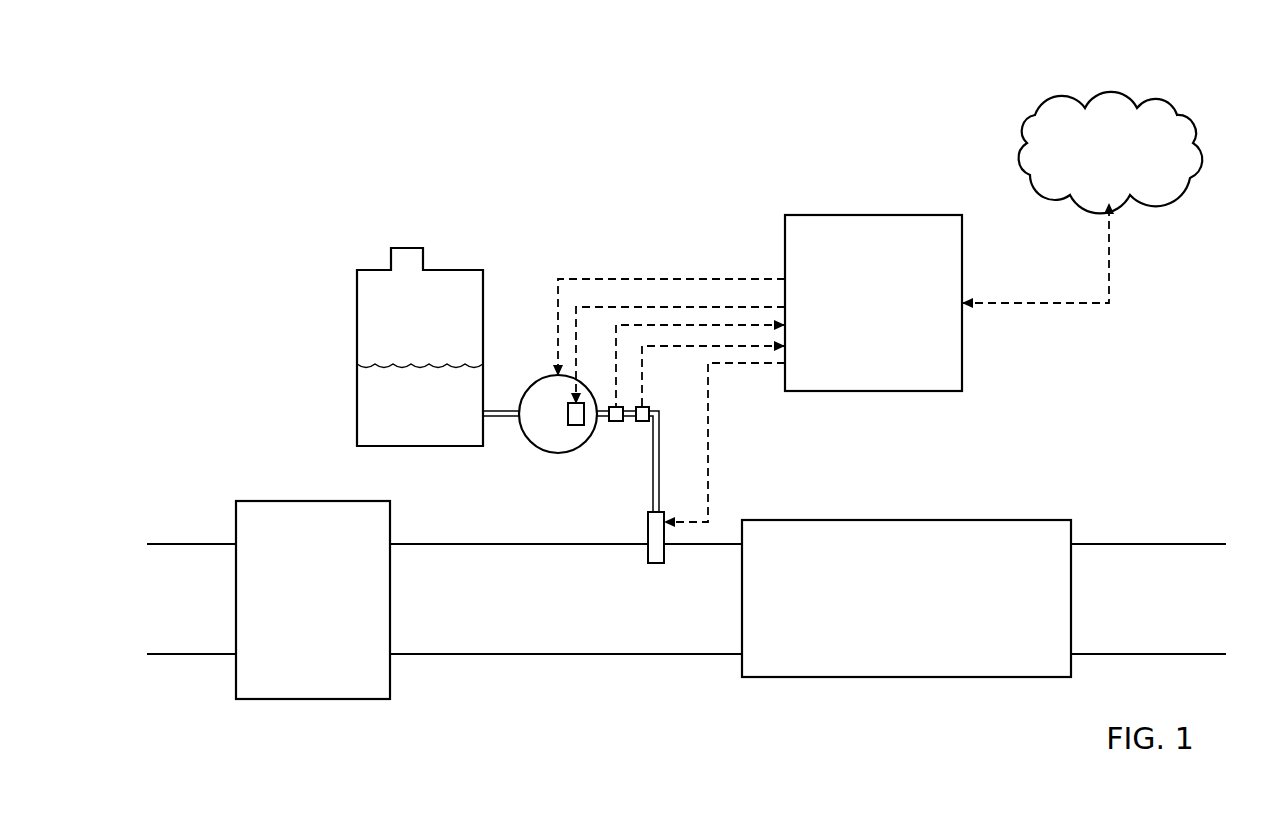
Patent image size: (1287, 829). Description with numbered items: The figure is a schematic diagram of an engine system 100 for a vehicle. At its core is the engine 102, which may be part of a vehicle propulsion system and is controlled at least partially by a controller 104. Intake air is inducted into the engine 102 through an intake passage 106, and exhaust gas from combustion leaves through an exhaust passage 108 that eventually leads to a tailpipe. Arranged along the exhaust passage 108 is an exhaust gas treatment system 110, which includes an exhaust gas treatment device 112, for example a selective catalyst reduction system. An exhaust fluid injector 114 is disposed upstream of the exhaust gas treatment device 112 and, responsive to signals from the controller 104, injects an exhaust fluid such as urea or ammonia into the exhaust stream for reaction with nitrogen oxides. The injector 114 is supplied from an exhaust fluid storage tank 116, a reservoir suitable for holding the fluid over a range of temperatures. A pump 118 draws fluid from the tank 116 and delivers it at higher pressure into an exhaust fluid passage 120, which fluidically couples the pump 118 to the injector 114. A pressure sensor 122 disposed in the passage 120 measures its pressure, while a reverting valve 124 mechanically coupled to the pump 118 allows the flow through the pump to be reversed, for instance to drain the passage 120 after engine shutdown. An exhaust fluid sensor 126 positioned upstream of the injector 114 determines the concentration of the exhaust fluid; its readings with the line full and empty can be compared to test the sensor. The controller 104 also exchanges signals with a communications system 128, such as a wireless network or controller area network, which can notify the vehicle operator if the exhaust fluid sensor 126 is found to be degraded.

The engine system 100 is at (320, 107).
The engine 102 is at (299, 618).
The controller 104 is at (859, 321).
The intake passage 106 is at (172, 606).
The exhaust passage 108 is at (537, 606).
The exhaust gas treatment system 110 is at (534, 250).
The exhaust gas treatment device 112 is at (892, 618).
The exhaust fluid injector 114 is at (648, 538).
The exhaust fluid storage tank 116 is at (444, 268).
The pump 118 is at (550, 452).
The exhaust fluid passage 120 is at (660, 458).
The pressure sensor 122 is at (613, 421).
The reverting valve 124 is at (578, 426).
The exhaust fluid sensor 126 is at (646, 406).
The communications system 128 is at (1095, 160).